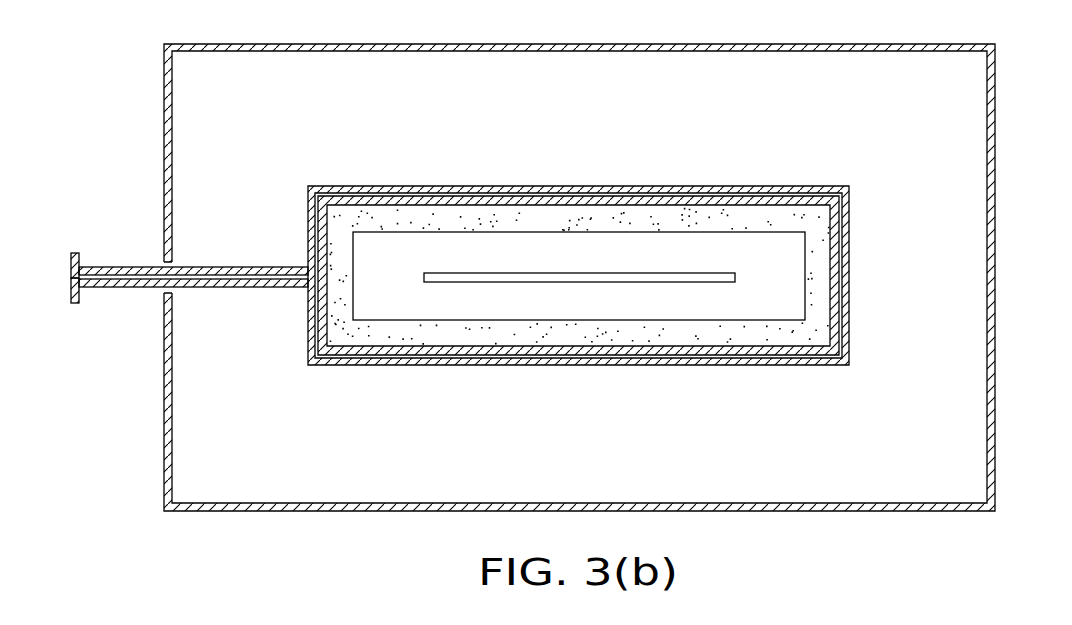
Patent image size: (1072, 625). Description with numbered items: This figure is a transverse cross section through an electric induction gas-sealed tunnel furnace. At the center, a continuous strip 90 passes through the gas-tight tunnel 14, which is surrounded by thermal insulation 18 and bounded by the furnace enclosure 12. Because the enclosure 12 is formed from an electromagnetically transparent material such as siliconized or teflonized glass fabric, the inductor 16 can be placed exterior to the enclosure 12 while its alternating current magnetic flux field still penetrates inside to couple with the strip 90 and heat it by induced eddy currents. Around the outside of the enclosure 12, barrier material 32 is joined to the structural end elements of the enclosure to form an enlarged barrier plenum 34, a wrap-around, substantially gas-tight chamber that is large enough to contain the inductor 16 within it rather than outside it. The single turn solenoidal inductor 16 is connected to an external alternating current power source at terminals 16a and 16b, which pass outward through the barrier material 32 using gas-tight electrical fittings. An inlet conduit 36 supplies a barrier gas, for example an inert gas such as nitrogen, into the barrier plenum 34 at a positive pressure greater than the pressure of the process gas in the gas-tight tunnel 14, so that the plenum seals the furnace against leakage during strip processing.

The barrier material 32 is at (995, 182).
The barrier plenum 34 is at (893, 127).
The terminal 16a is at (78, 253).
The terminal 16b is at (74, 303).
The inductor 16 is at (849, 248).
The enclosure 12 is at (838, 266).
The thermal insulation 18 is at (813, 334).
The gas-tight tunnel 14 is at (784, 266).
The strip 90 is at (653, 277).
The inlet conduit 36 is at (607, 619).